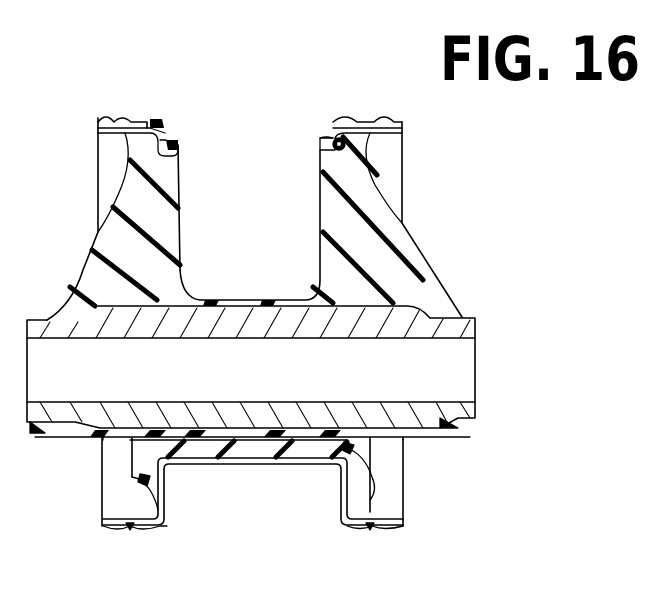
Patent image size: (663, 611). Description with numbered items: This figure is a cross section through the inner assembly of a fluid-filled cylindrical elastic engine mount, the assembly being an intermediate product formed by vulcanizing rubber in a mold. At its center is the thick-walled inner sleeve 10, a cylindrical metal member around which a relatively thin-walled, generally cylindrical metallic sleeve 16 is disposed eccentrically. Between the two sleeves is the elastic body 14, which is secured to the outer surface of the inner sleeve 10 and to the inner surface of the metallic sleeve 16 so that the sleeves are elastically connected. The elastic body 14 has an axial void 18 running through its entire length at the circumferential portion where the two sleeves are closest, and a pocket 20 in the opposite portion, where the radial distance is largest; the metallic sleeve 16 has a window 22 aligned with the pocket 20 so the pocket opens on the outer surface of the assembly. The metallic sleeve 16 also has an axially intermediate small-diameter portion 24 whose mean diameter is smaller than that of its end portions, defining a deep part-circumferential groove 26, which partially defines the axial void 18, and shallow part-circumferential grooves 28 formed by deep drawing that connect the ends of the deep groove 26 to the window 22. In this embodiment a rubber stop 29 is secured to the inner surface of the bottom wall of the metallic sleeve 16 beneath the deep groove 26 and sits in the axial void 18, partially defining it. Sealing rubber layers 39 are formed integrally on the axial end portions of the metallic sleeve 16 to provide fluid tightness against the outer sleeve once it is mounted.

The inner sleeve 10 is at (467, 320).
The elastic body 14 is at (115, 243).
The metallic sleeve 16 is at (222, 468).
The axial void 18 is at (378, 450).
The pocket 20 is at (320, 200).
The window 22 is at (322, 148).
The small-diameter portion 24 is at (160, 138).
The deep part-circumferential groove 26 is at (278, 466).
The shallow part-circumferential groove 28 is at (336, 144).
The rubber stop 29 is at (182, 452).
The sealing rubber layer 39 is at (115, 117).